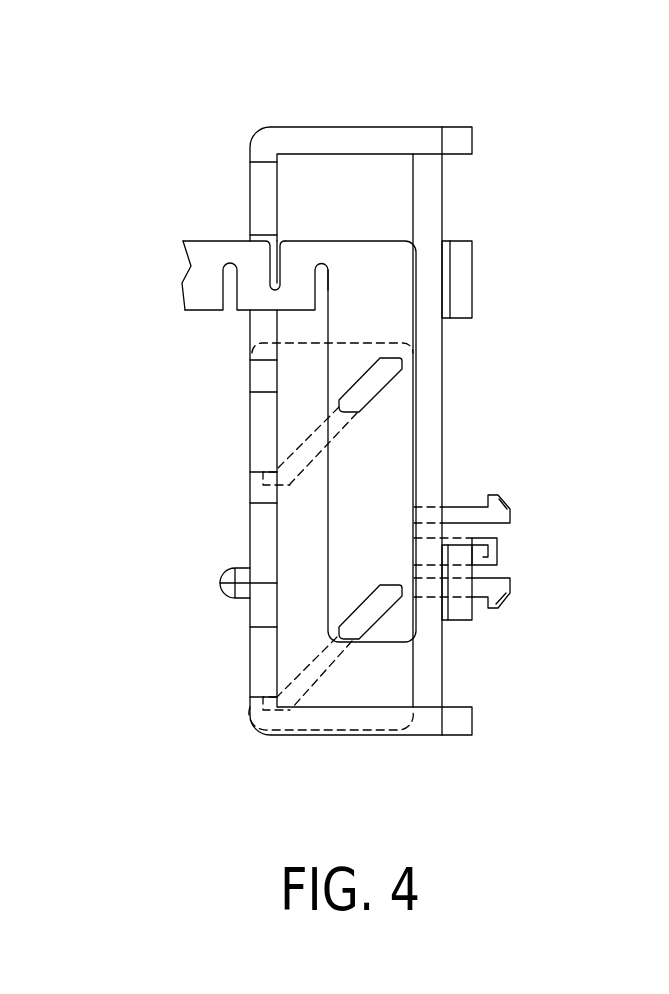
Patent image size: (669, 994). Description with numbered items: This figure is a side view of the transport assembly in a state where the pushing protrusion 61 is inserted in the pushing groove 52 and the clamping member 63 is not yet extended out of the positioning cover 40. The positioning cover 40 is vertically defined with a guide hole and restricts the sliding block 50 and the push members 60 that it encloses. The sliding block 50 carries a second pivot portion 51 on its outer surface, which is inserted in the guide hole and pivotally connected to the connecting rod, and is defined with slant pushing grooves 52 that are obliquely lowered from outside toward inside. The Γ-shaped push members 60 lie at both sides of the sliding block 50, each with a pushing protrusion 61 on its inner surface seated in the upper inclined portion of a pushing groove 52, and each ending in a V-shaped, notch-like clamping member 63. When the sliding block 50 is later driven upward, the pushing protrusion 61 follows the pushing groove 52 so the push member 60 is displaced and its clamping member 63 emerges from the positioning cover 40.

The positioning cover 40 is at (256, 129).
The sliding block 50 is at (353, 340).
The second pivot portion 51 is at (483, 555).
The slant pushing groove 52 is at (303, 448).
The push member 60 is at (376, 247).
The pushing protrusion 61 is at (372, 387).
The clamping member 63 is at (193, 278).